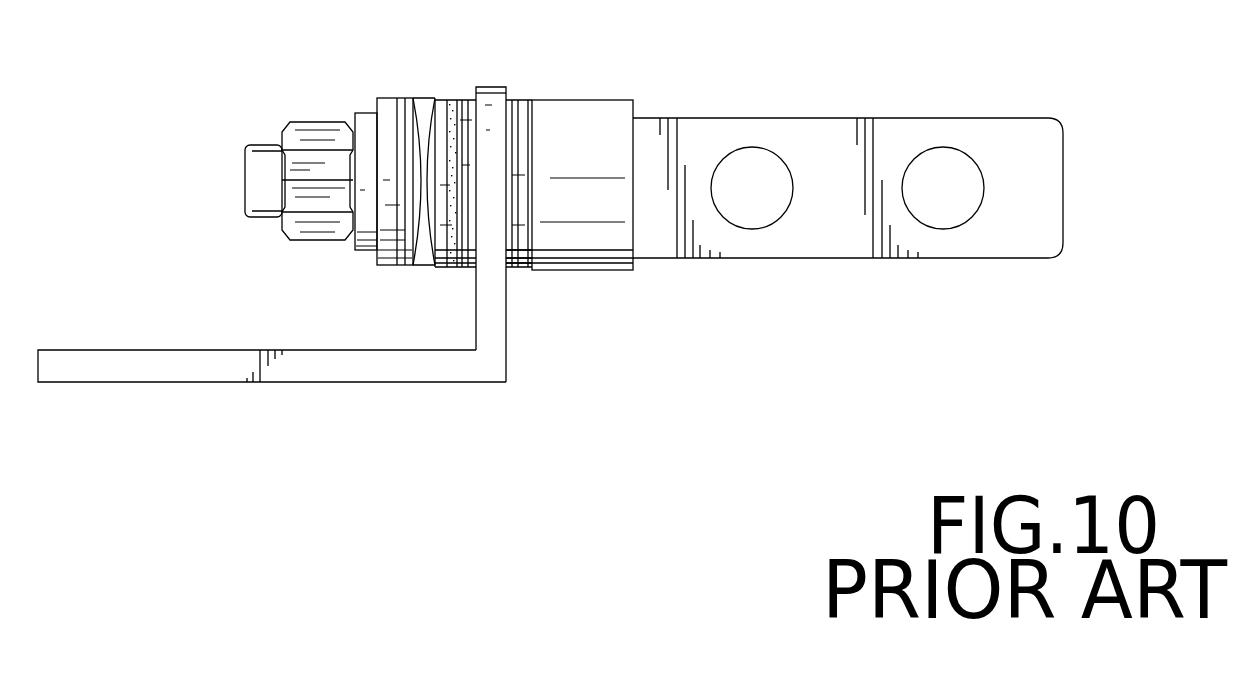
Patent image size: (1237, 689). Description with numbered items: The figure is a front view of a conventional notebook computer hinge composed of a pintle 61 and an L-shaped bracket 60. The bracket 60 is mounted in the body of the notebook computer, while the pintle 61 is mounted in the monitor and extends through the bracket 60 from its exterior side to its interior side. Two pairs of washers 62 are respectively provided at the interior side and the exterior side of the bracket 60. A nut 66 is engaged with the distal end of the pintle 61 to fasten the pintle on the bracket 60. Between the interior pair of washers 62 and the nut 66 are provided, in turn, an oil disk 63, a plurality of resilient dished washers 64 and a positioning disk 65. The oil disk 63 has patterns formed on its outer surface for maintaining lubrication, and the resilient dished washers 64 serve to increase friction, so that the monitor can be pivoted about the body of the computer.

The L-shaped bracket 60 is at (306, 376).
The pintle 61 is at (258, 153).
The washers 62 is at (462, 100).
The oil disk 63 is at (452, 100).
The resilient dished washers 64 is at (435, 100).
The positioning disk 65 is at (390, 267).
The nut 66 is at (307, 243).